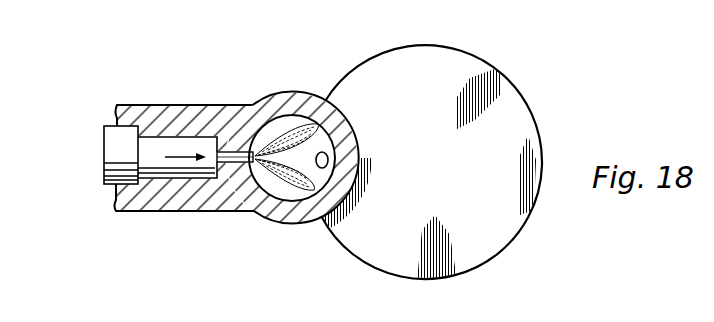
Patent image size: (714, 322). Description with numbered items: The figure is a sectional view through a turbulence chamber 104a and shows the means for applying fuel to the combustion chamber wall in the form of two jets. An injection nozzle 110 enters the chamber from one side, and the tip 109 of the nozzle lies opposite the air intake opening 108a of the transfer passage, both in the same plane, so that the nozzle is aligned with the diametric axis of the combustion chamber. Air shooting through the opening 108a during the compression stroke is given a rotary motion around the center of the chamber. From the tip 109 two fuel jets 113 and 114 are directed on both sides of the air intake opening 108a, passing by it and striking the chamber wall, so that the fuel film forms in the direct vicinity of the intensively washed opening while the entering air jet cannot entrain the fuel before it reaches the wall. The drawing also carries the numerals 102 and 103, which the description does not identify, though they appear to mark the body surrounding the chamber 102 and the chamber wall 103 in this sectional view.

The spherical body 102 is at (520, 123).
The spherical cavity 103 is at (297, 107).
The turbulence chamber 104a is at (263, 207).
The air intake opening 108a is at (358, 150).
The tip of the nozzle 109 is at (272, 118).
The injection nozzle 110 is at (152, 145).
The fuel jet 113 is at (327, 117).
The fuel jet 114 is at (290, 222).